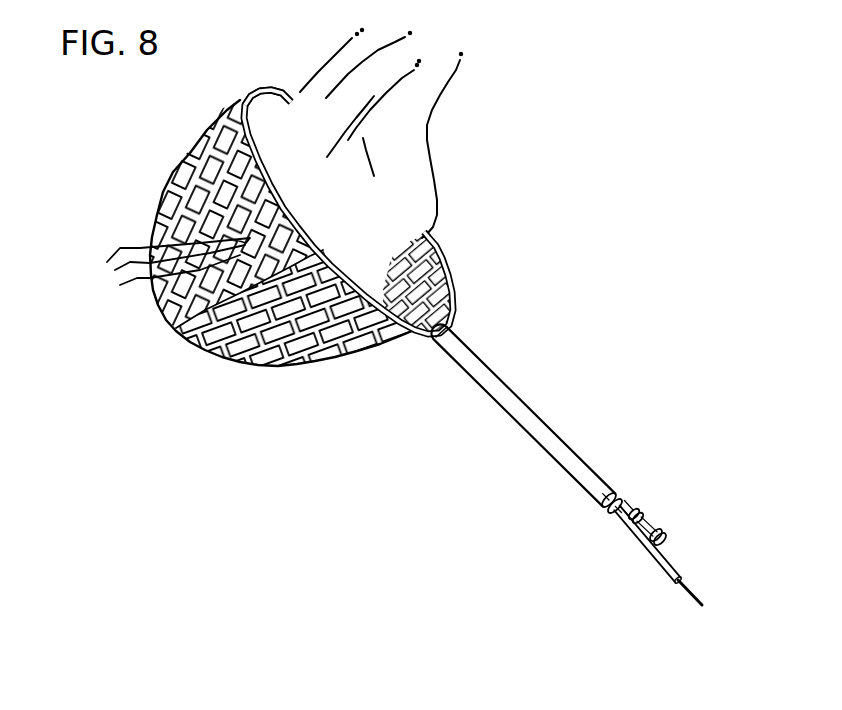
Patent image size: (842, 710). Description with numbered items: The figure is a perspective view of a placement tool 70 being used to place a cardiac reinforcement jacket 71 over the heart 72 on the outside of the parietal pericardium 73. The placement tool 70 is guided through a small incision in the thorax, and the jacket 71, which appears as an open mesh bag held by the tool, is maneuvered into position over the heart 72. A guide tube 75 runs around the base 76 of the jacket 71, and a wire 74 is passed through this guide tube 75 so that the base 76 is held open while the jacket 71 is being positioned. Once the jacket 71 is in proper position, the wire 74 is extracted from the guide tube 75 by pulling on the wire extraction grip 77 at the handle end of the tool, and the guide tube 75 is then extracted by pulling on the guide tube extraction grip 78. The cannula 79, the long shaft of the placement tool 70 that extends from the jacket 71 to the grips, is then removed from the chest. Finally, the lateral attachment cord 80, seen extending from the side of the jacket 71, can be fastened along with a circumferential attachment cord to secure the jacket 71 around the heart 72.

The placement tool 70 is at (523, 415).
The jacket 71 is at (243, 233).
The heart 72 is at (376, 212).
The parietal pericardium 73 is at (445, 284).
The wire 74 is at (686, 548).
The guide tube 75 is at (556, 397).
The base 76 is at (227, 95).
The wire extraction grip 77 is at (684, 530).
The guide tube extraction grip 78 is at (647, 495).
The cannula 79 is at (486, 319).
The lateral attachment cord 80 is at (163, 265).